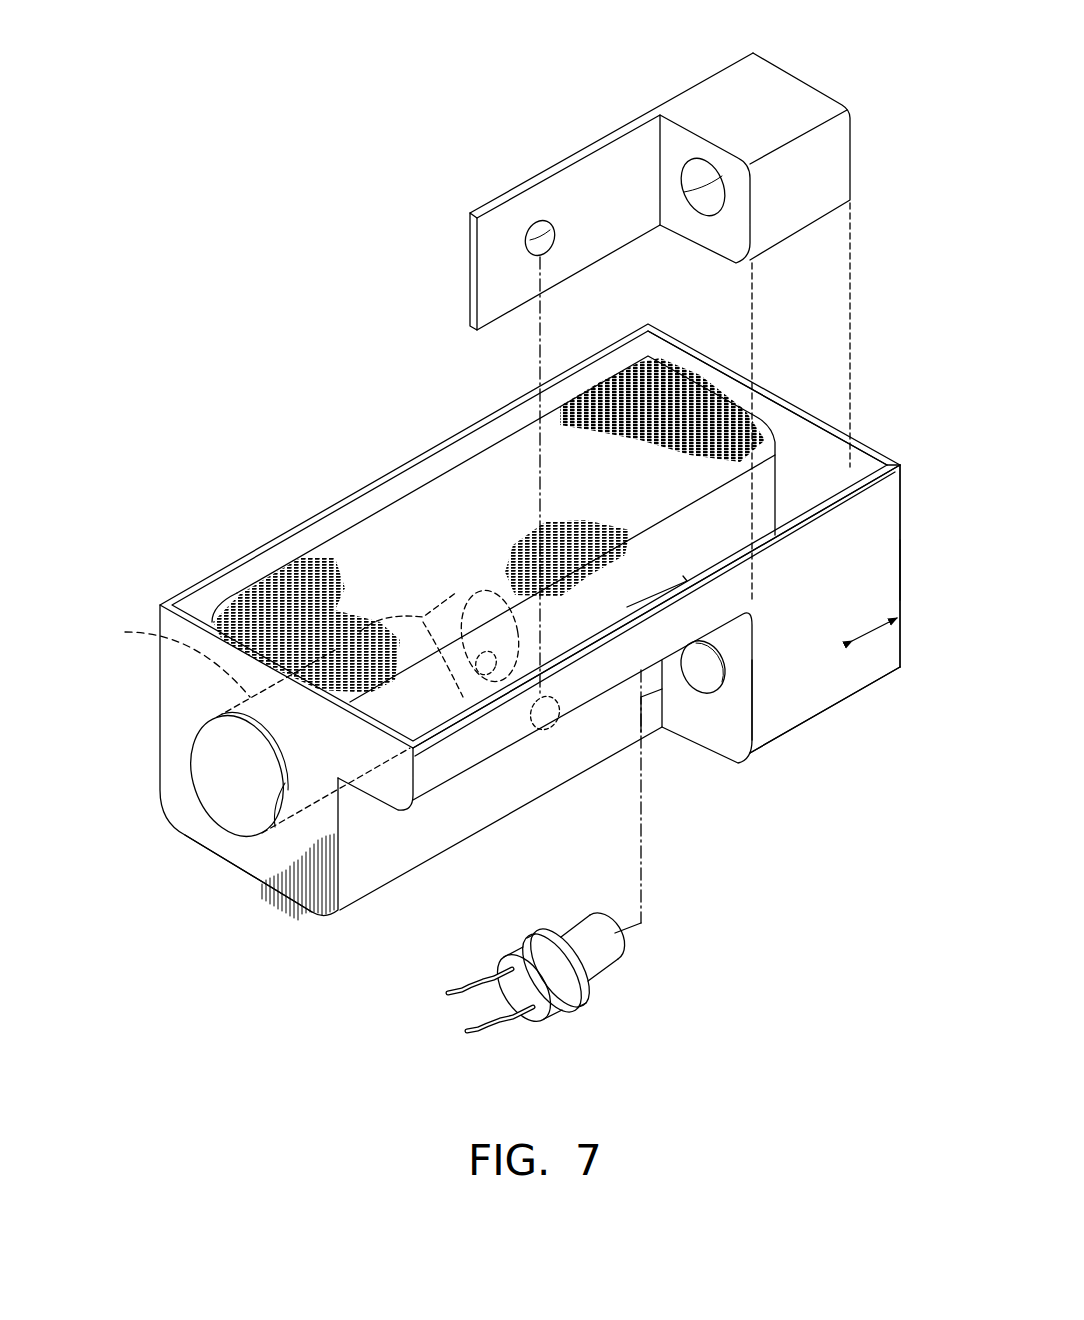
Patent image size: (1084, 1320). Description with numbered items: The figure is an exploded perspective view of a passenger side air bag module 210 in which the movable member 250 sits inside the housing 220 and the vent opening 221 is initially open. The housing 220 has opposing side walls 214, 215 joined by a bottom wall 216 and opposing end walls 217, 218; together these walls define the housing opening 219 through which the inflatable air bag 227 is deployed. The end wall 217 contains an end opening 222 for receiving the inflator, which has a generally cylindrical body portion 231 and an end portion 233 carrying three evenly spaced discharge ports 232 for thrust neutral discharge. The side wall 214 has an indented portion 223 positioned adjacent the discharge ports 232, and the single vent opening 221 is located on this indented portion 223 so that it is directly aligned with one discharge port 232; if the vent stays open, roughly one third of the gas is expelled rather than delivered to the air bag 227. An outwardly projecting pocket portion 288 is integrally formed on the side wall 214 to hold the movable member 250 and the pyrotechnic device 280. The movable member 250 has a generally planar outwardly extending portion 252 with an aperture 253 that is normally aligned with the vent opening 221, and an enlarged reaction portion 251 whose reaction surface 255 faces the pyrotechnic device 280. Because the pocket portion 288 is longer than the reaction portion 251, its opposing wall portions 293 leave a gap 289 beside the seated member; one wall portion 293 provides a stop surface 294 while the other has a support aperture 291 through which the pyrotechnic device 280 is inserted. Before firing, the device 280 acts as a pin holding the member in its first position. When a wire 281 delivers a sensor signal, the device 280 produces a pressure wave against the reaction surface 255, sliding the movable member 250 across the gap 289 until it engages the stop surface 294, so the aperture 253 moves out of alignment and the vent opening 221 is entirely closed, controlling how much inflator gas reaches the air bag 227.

The module 210 is at (373, 353).
The side wall 214 is at (400, 858).
The side wall 215 is at (222, 568).
The bottom wall 216 is at (232, 870).
The end wall 217 is at (193, 835).
The end wall 218 is at (901, 478).
The housing opening 219 is at (792, 420).
The housing 220 is at (376, 482).
The vent opening 221 is at (547, 730).
The end opening 222 is at (277, 827).
The indented portion 223 is at (500, 790).
The inflatable air bag 227 is at (400, 535).
The body portion 231 is at (367, 630).
The discharge ports 232 is at (498, 650).
The end portion 233 is at (460, 590).
The movable member 250 is at (662, 301).
The reaction portion 251 is at (800, 105).
The outwardly extending portion 252 is at (500, 228).
The aperture 253 is at (546, 225).
The reaction surface 255 is at (695, 190).
The pyrotechnic device 280 is at (580, 883).
The wire 281 is at (513, 1022).
The pocket portion 288 is at (802, 728).
The gap 289 is at (880, 632).
The support aperture 291 is at (704, 690).
The wall portions 293 is at (901, 553).
The stop surface 294 is at (862, 465).